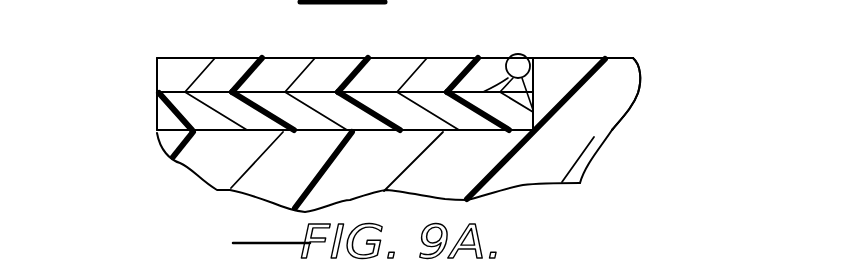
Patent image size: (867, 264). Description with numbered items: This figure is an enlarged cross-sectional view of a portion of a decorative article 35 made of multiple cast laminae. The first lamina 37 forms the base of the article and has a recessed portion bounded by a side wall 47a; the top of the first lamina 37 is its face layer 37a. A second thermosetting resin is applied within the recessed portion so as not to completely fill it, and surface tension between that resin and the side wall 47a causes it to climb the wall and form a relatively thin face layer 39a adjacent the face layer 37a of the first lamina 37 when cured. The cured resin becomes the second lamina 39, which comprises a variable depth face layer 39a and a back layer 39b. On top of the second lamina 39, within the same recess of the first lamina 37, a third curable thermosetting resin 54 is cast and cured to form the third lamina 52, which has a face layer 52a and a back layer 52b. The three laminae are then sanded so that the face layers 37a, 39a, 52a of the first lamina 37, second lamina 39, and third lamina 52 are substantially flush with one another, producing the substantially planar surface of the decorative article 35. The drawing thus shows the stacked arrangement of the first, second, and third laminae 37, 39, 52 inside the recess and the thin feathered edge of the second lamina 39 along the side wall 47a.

The decorative article 35 is at (640, 90).
The first lamina 37 is at (578, 138).
The face layer of the first lamina 37a is at (585, 58).
The second lamina 39 is at (180, 107).
The face layer of the second lamina 39a is at (177, 91).
The back layer of the second lamina 39b is at (219, 134).
The side wall of recessed portion 47a is at (507, 55).
The third lamina 52 is at (177, 66).
The face layer of the third lamina 52a is at (353, 58).
The back layer of the third lamina 52b is at (313, 93).
The third curable thermosetting resin 54 is at (248, 50).